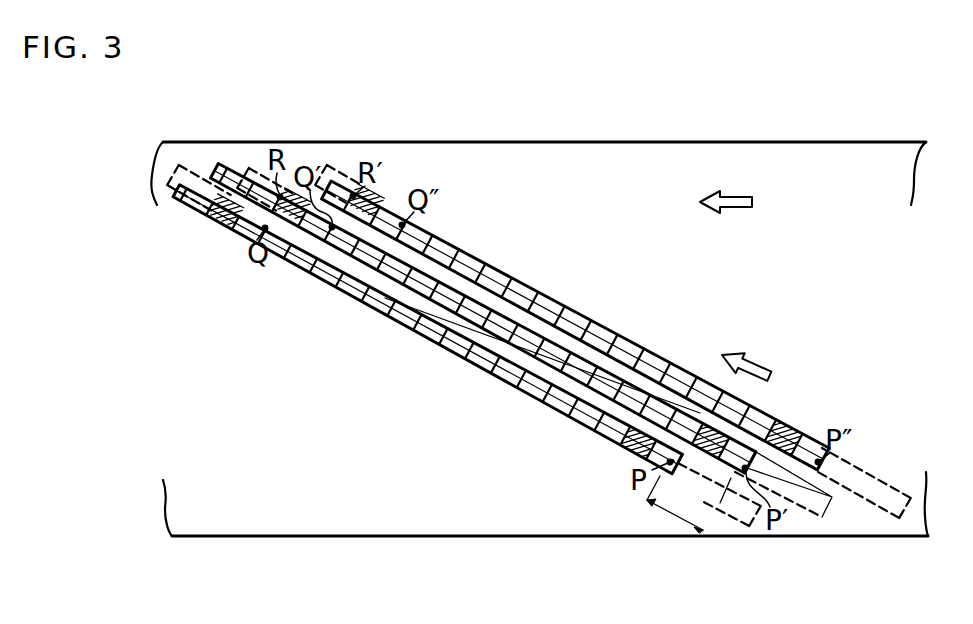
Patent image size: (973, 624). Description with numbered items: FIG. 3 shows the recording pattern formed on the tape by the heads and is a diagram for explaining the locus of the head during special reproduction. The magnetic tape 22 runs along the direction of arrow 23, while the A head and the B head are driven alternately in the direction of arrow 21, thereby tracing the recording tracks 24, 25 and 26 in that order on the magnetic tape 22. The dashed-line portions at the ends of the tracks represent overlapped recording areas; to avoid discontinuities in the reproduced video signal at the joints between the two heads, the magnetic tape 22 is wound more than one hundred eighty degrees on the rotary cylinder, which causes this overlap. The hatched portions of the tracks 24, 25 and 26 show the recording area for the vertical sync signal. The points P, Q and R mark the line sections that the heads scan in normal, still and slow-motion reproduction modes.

The arrow 21 is at (762, 362).
The magnetic tape 22 is at (606, 140).
The arrow 23 is at (735, 207).
The recording track 24 is at (465, 358).
The recording track 25 is at (497, 312).
The recording track 26 is at (558, 304).